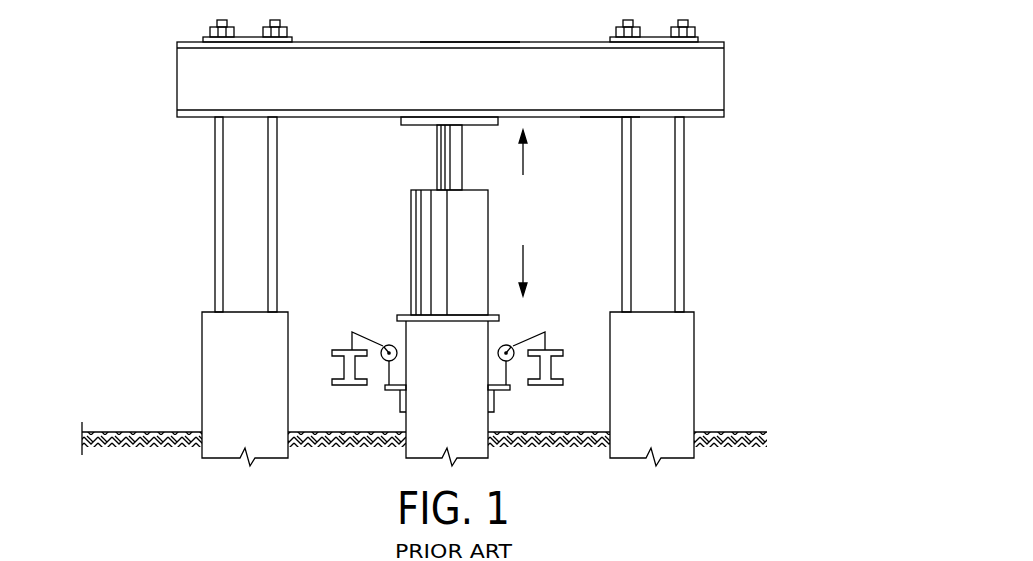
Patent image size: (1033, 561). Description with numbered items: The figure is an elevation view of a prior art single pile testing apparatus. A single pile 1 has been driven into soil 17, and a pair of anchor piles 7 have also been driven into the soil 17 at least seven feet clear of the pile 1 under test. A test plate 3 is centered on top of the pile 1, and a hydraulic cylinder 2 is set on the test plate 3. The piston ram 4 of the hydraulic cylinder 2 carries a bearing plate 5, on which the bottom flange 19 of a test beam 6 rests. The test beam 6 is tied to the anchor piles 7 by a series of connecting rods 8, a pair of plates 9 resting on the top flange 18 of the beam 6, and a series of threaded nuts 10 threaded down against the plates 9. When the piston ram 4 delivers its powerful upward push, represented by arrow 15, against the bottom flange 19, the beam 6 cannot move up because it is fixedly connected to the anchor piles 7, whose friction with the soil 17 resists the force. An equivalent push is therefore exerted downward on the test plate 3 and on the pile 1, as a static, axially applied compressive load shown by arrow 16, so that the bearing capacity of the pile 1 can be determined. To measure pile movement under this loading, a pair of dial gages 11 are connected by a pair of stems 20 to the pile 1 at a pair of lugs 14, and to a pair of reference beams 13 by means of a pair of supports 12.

The single pile 1 is at (495, 438).
The hydraulic cylinder 2 is at (488, 235).
The test plate 3 is at (499, 318).
The piston ram 4 is at (437, 172).
The bearing plate 5 is at (405, 125).
The test beam 6 is at (503, 87).
The anchor piles 7 is at (202, 355).
The connecting rods 8 is at (215, 220).
The plates 9 is at (292, 41).
The threaded nuts 10 is at (265, 27).
The dial gages 11 is at (389, 345).
The supports 12 is at (354, 330).
The reference beams 13 is at (333, 352).
The lugs 14 is at (400, 408).
The arrow 15 is at (523, 160).
The arrow 16 is at (523, 258).
The soil 17 is at (724, 432).
The top flange 18 is at (465, 42).
The bottom flange 19 is at (604, 118).
The stems 20 is at (385, 388).